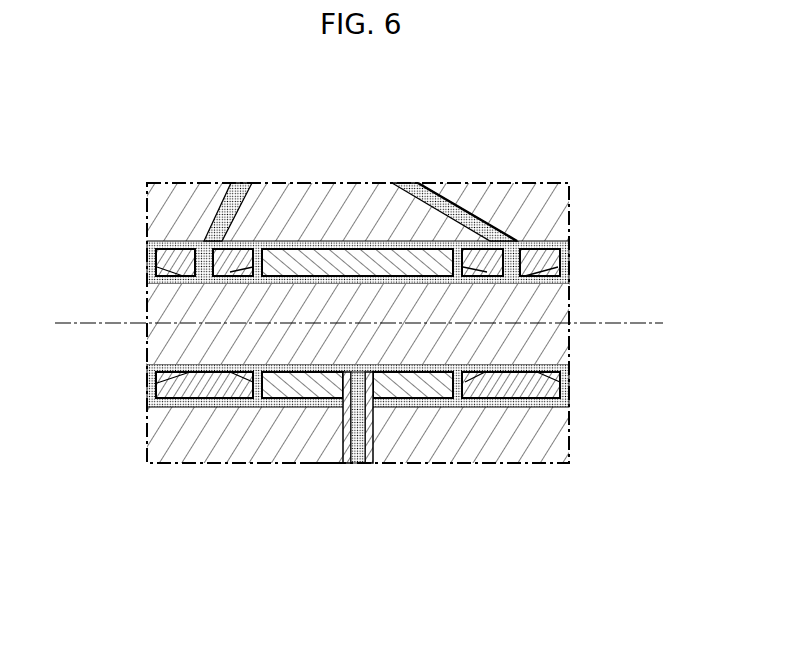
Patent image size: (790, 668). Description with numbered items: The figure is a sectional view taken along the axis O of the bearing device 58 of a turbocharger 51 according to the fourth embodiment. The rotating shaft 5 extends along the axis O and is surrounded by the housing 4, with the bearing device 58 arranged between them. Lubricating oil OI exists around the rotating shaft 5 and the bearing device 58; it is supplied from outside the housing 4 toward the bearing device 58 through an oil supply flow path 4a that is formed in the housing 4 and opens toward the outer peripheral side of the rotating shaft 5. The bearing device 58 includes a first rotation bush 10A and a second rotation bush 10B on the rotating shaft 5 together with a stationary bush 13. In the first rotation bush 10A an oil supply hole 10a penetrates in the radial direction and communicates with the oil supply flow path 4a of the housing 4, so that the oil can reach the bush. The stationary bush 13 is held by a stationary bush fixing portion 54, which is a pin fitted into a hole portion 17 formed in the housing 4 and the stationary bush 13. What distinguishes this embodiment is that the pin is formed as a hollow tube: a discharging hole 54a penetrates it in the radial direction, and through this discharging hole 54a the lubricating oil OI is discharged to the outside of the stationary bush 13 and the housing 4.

The housing 4 is at (553, 438).
The oil supply flow path 4a is at (224, 190).
The rotating shaft 5 is at (553, 302).
The oil supply hole 10a is at (205, 267).
The first rotation bush 10A is at (217, 387).
The second rotation bush 10B is at (513, 388).
The stationary bush 13 is at (432, 392).
The hole portion 17 is at (318, 462).
The turbocharger 51 is at (562, 108).
The stationary bush fixing portion 54 is at (377, 464).
The discharging hole 54a is at (352, 462).
The bearing device 58 is at (480, 156).
The axis O is at (640, 322).
The lubricating oil OI is at (181, 285).